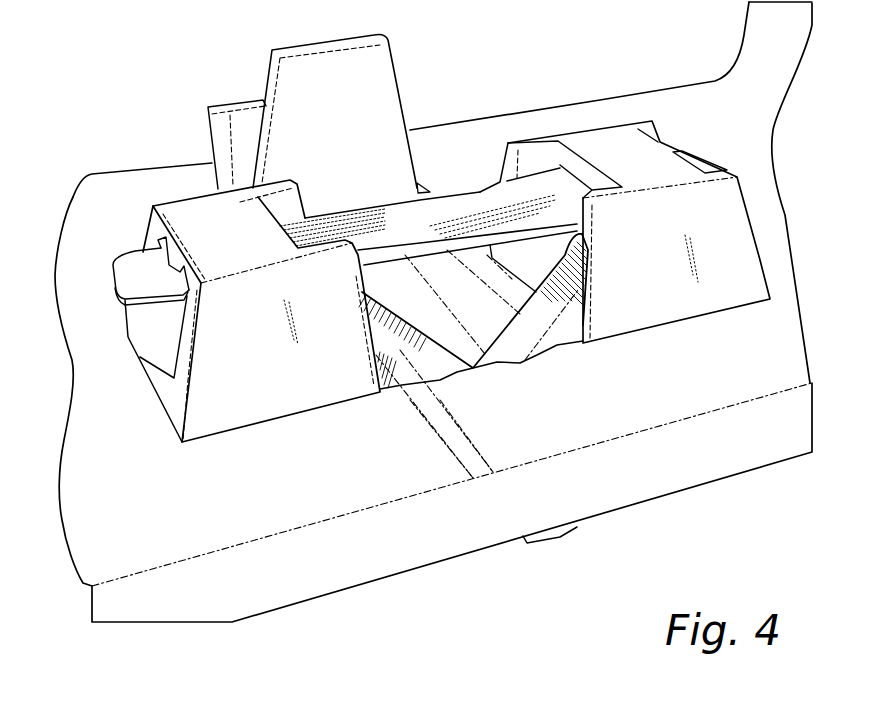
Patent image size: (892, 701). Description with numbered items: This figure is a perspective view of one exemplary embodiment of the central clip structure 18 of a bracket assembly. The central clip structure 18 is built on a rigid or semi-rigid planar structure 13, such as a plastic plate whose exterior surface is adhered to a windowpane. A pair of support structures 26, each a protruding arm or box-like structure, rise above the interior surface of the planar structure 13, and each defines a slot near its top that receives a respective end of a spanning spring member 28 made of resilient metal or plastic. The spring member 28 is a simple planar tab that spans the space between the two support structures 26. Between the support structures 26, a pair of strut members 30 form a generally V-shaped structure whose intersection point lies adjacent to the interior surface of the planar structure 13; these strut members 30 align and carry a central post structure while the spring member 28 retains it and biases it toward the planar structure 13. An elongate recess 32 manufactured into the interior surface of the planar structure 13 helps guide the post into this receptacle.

The planar structure 13 is at (265, 487).
The central clip structure 18 is at (455, 156).
The support structures 26 is at (180, 210).
The spring member 28 is at (480, 193).
The strut members 30 is at (397, 350).
The elongate recess 32 is at (532, 441).